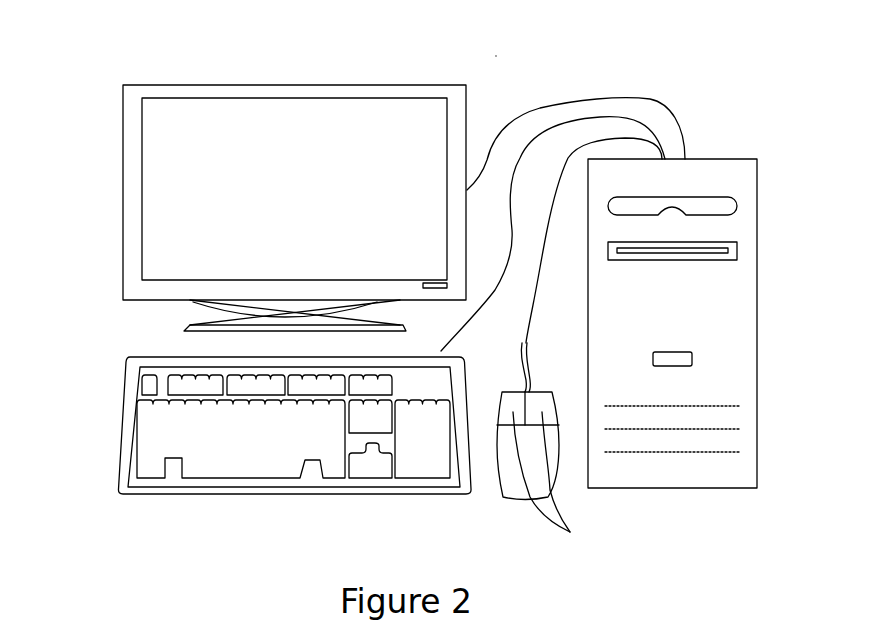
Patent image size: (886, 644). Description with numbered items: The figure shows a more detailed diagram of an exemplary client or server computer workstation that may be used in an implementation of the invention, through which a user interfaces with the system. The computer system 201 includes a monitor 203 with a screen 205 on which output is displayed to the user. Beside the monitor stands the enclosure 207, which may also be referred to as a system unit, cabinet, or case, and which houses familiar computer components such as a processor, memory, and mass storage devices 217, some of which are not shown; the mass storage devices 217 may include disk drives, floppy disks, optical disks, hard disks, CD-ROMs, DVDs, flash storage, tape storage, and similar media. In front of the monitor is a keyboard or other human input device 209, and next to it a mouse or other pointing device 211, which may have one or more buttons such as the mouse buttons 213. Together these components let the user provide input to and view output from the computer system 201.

The computer system 201 is at (496, 56).
The monitor 203 is at (289, 85).
The screen 205 is at (165, 188).
The enclosure 207 is at (757, 357).
The keyboard 209 is at (123, 418).
The mouse 211 is at (512, 478).
The mouse buttons 213 is at (570, 532).
The mass storage devices 217 is at (727, 197).